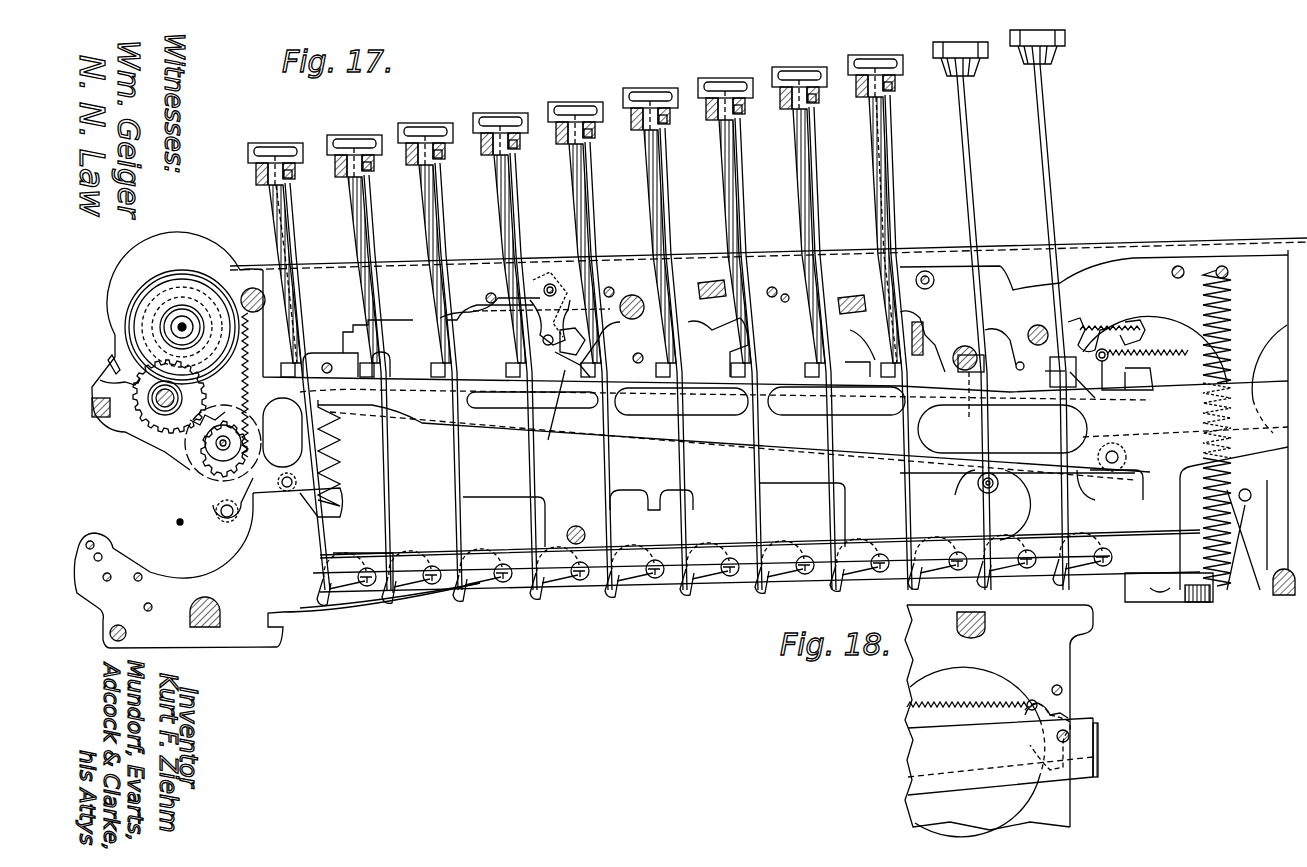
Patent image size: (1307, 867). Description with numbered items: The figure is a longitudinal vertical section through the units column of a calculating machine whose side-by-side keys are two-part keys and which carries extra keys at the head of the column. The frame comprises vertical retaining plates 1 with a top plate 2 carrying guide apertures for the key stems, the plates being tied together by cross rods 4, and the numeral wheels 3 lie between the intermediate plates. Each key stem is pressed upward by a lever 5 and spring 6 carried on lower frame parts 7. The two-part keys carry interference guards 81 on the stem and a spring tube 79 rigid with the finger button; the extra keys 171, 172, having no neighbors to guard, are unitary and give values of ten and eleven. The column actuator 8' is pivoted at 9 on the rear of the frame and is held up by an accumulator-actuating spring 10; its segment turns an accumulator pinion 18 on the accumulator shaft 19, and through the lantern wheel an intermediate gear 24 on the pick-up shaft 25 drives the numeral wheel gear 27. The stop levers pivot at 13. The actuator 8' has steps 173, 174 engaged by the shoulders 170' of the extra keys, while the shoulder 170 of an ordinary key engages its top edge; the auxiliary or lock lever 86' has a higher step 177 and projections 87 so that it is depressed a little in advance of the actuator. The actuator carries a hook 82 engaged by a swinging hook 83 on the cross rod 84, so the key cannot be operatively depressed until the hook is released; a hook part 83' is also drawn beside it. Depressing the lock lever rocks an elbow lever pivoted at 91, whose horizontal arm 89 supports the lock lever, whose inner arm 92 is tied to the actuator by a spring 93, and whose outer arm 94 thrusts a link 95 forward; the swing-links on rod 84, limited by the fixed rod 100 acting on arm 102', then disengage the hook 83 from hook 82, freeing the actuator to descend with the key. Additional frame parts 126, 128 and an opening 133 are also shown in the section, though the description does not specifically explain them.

In FIG. 17, the vertical retaining plate 1 is at (1135, 262).
In FIG. 18, the vertical retaining plate 1 is at (1073, 655).
In FIG. 17, the top plate 2 is at (768, 247).
In FIG. 17, the numeral wheel 3 is at (130, 300).
In FIG. 17, the cross bar or tie rod 4 is at (1278, 596).
In FIG. 18, the cross bar or tie rod 4 is at (986, 625).
In FIG. 17, the lever 5 is at (400, 570).
In FIG. 17, the spring 6 is at (430, 590).
In FIG. 17, the lower frame part 7 is at (490, 602).
In FIG. 17, the column actuator 8' is at (725, 433).
In FIG. 18, the column actuator 8' is at (1003, 749).
In FIG. 18, the pivot 9 is at (1072, 736).
In FIG. 17, the accumulator-actuating spring 10 is at (1232, 302).
In FIG. 18, the pivot 13 is at (1064, 687).
In FIG. 17, the accumulator pinion 18 is at (205, 460).
In FIG. 17, the accumulator shaft 19 is at (223, 436).
In FIG. 17, the intermediate gear 24 is at (108, 374).
In FIG. 17, the intermediate pick-up shaft 25 is at (152, 412).
In FIG. 17, the numeral wheel gear 27 is at (160, 297).
In FIG. 17, the spring tube 79 is at (272, 228).
In FIG. 17, the interference guard 81 is at (279, 150).
In FIG. 17, the hook 82 is at (592, 352).
In FIG. 17, the swinging hook 83 is at (525, 326).
In FIG. 17, the latch arm 83' is at (598, 315).
In FIG. 17, the cross rod 84 is at (549, 284).
In FIG. 17, the auxiliary or lock lever 86' is at (1002, 429).
In FIG. 17, the projection 87 is at (408, 357).
In FIG. 17, the horizontal arm 89 is at (1070, 478).
In FIG. 17, the pivot 91 is at (1128, 456).
In FIG. 17, the inner vertical arm 92 is at (1140, 394).
In FIG. 17, the spring 93 is at (1155, 349).
In FIG. 18, the spring 93 is at (938, 702).
In FIG. 17, the outer vertical arm 94 is at (1078, 320).
In FIG. 17, the link 95 is at (575, 366).
In FIG. 17, the fixed cross rod 100 is at (490, 294).
In FIG. 17, the arm 102' is at (490, 316).
In FIG. 17, the block 126 is at (712, 278).
In FIG. 17, the block 128 is at (851, 296).
In FIG. 17, the hole 133 is at (791, 313).
In FIG. 17, the shoulder or projection 170 is at (732, 332).
In FIG. 17, the shoulder 170' is at (1065, 327).
In FIG. 17, the extra key 171 is at (960, 42).
In FIG. 17, the extra key 172 is at (1040, 32).
In FIG. 17, the step 173 is at (1028, 355).
In FIG. 17, the step 174 is at (1041, 368).
In FIG. 17, the step 177 is at (975, 345).